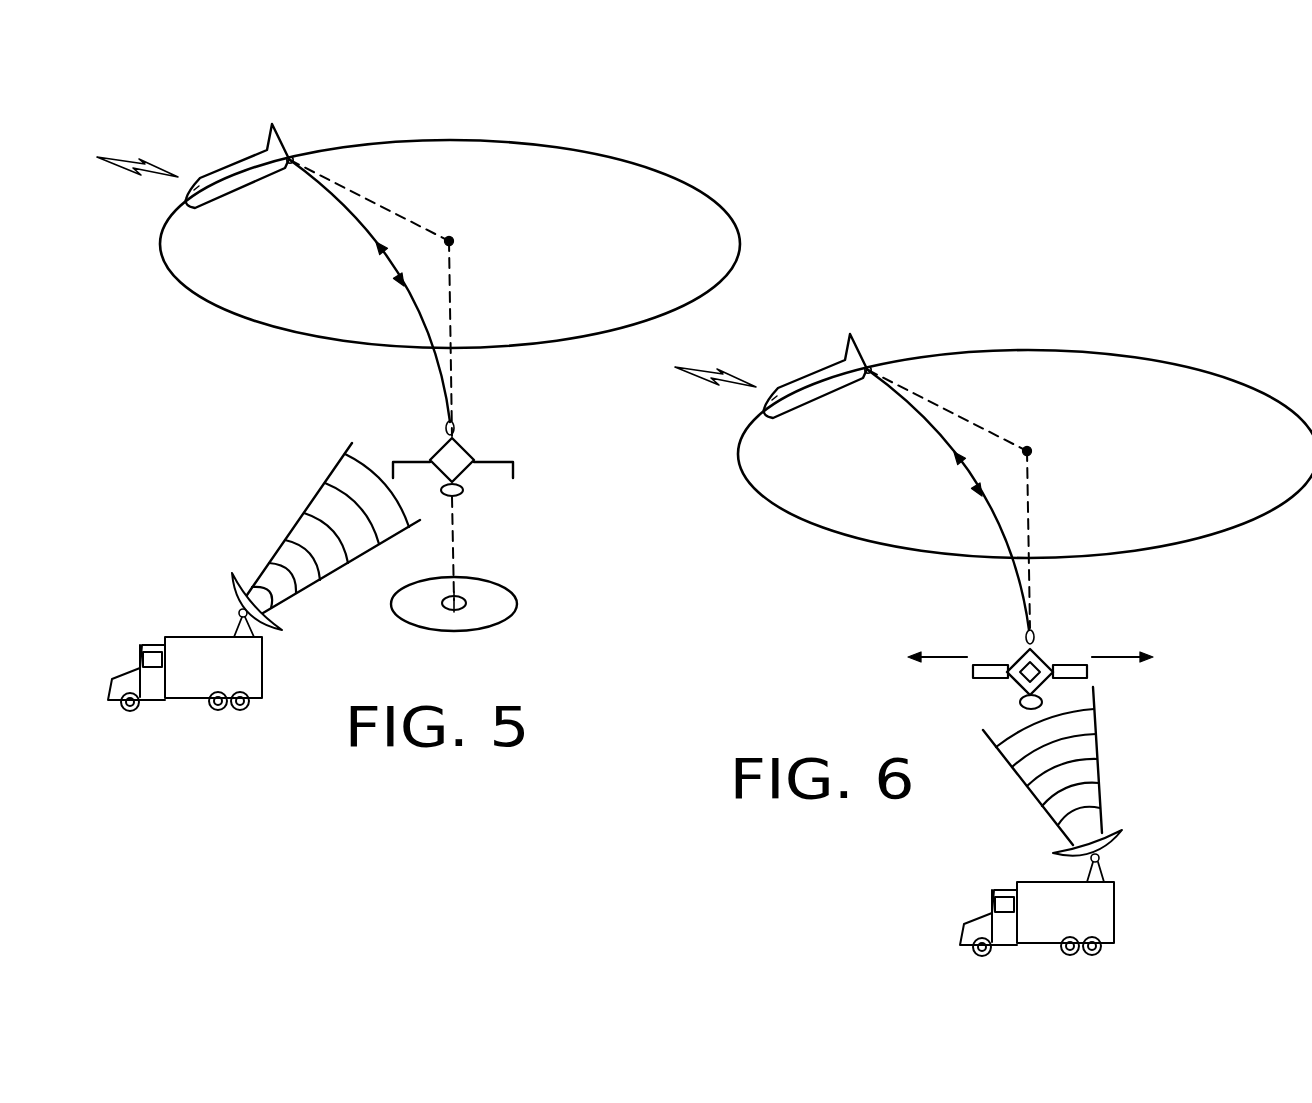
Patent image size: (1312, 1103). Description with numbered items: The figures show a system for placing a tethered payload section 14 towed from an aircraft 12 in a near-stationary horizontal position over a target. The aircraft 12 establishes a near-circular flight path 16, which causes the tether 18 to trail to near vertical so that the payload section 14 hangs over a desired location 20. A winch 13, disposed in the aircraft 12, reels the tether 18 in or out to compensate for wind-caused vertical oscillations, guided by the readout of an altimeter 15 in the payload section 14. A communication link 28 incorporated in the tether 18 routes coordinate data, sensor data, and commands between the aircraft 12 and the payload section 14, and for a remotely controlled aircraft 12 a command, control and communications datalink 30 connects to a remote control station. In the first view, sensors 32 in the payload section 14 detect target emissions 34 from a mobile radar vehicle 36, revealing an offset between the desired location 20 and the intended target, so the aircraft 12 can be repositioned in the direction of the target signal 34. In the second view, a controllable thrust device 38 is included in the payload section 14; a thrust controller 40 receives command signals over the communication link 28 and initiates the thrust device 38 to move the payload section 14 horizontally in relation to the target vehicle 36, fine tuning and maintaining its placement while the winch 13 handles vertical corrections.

In FIG. 5, the aircraft 12 is at (232, 178).
In FIG. 6, the aircraft 12 is at (810, 385).
In FIG. 5, the winch 13 is at (292, 156).
In FIG. 6, the winch 13 is at (871, 365).
In FIG. 5, the payload section 14 is at (436, 448).
In FIG. 6, the payload section 14 is at (1013, 662).
In FIG. 5, the altimeter 15 is at (462, 492).
In FIG. 6, the altimeter 15 is at (1020, 702).
In FIG. 5, the near-circular flight path 16 is at (718, 196).
In FIG. 6, the near-circular flight path 16 is at (1168, 356).
In FIG. 5, the tether 18 is at (336, 205).
In FIG. 6, the tether 18 is at (918, 414).
In FIG. 5, the desired location 20 is at (466, 602).
In FIG. 5, the communication link 28 is at (392, 262).
In FIG. 6, the communication link 28 is at (975, 484).
In FIG. 5, the command, control and communications datalink 30 is at (140, 182).
In FIG. 6, the command, control and communications datalink 30 is at (716, 384).
In FIG. 5, the sensors 32 is at (394, 458).
In FIG. 5, the target emissions 34 is at (288, 515).
In FIG. 6, the target emissions 34 is at (1100, 775).
In FIG. 5, the mobile radar vehicle 36 is at (165, 640).
In FIG. 6, the mobile radar vehicle 36 is at (1015, 882).
In FIG. 6, the controllable thrust device 38 is at (980, 681).
In FIG. 6, the thrust controller 40 is at (1042, 648).